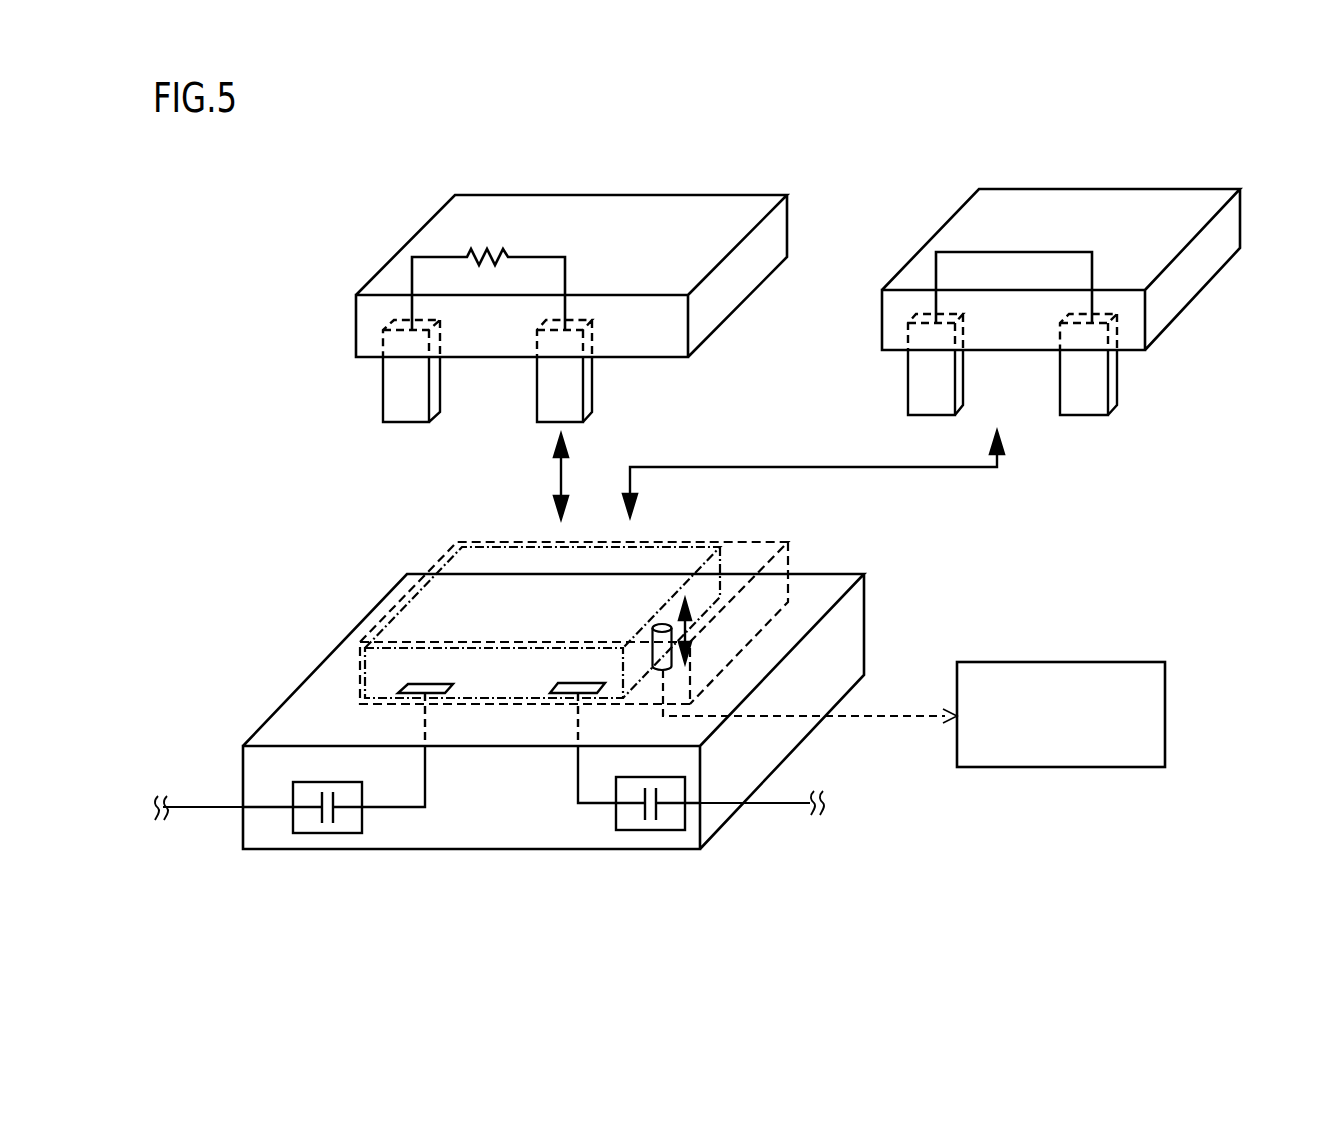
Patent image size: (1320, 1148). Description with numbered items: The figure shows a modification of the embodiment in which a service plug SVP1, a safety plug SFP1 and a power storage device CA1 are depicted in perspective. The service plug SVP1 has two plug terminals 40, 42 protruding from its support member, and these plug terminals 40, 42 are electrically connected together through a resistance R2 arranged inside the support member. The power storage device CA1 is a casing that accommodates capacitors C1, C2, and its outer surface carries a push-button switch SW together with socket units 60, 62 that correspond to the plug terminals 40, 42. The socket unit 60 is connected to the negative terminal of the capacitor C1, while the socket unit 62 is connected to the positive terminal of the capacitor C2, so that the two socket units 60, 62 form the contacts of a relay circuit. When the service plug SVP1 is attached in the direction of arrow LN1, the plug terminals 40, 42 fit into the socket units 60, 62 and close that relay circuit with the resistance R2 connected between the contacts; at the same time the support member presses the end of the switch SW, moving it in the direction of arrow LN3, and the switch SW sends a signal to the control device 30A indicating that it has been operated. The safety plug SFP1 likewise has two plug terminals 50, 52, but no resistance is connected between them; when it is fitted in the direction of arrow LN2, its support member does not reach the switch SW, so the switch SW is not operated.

The service plug SVP1 is at (645, 192).
The resistance R2 is at (486, 250).
The plug terminal 40 is at (408, 425).
The plug terminal 42 is at (573, 424).
The safety plug SFP1 is at (1107, 187).
The plug terminal 50 is at (933, 416).
The plug terminal 52 is at (1087, 417).
The arrow LN1 is at (558, 486).
The arrow LN2 is at (999, 467).
The arrow LN3 is at (690, 613).
The power storage device CA1 is at (473, 849).
The socket unit 60 is at (405, 688).
The socket unit 62 is at (563, 690).
The capacitor C1 is at (328, 833).
The capacitor C2 is at (652, 830).
The push-button switch SW is at (662, 624).
The control device 30A is at (1130, 768).